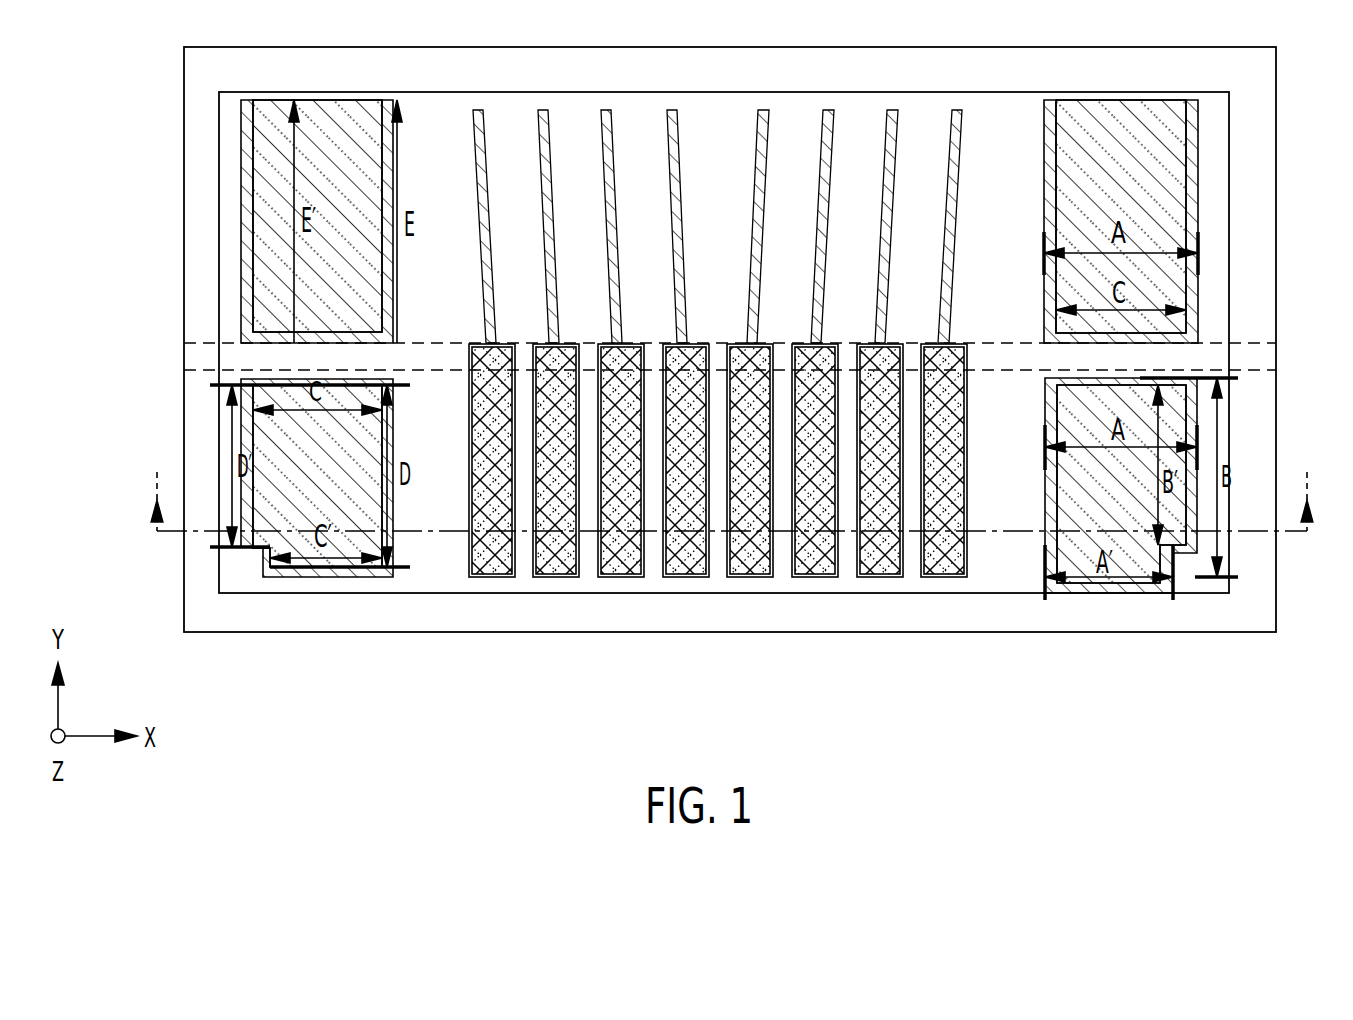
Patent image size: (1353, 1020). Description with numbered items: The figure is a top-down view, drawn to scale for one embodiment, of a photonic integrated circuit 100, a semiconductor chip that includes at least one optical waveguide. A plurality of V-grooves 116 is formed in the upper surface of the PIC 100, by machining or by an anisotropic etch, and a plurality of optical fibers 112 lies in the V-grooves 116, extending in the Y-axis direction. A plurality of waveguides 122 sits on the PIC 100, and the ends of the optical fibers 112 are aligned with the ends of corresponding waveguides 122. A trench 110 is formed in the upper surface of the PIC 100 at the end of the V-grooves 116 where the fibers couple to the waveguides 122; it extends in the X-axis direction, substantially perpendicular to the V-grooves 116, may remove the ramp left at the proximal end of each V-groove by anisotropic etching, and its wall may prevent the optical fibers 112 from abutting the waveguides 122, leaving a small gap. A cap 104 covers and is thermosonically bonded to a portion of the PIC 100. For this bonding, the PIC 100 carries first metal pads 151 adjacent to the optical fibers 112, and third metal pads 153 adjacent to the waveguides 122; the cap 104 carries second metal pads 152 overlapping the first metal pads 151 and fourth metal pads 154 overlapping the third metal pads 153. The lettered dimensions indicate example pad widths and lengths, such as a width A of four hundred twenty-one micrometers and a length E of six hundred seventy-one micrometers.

The photonic integrated circuit 100 is at (1277, 553).
The cap 104 is at (1230, 587).
The trench 110 is at (1265, 356).
The optical fibers 112 is at (756, 518).
The V-grooves 116 is at (948, 572).
The waveguides 122 is at (958, 178).
The first metal pads 151 is at (252, 432).
The second metal pads 152 is at (252, 442).
The third metal pads 153 is at (240, 222).
The fourth metal pads 154 is at (252, 182).